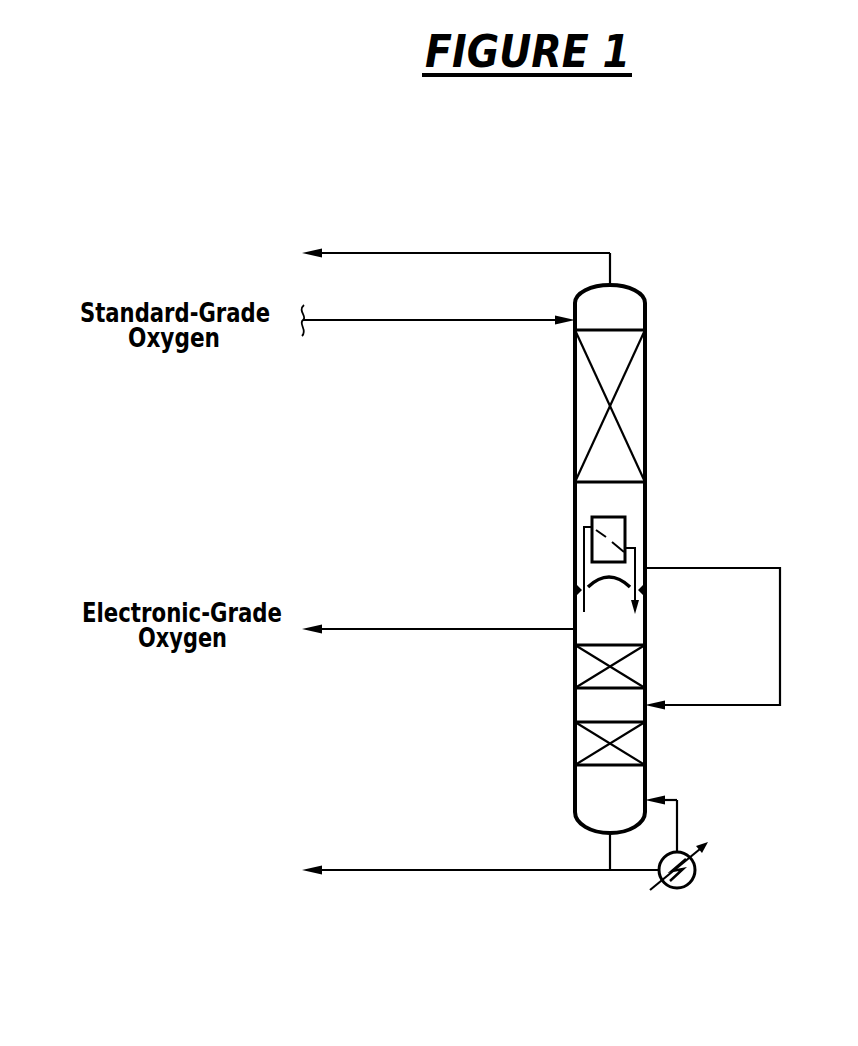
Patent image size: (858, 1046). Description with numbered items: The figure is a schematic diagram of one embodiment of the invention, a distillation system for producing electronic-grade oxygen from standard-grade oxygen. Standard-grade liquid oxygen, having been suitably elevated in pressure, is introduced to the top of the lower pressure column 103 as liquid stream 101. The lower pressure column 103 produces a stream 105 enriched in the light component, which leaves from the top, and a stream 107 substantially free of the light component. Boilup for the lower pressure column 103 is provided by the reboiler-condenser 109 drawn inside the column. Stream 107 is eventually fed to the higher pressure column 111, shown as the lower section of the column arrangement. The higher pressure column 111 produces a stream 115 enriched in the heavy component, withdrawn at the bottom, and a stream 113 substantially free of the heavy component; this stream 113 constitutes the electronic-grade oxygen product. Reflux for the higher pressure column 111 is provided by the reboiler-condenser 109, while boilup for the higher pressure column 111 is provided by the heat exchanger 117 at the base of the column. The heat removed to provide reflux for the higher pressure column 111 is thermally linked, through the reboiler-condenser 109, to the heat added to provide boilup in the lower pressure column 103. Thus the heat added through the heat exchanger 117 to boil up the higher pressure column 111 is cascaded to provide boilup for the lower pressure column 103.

The liquid stream 101 is at (440, 320).
The lower pressure column 103 is at (645, 397).
The stream enriched in the light component 105 is at (459, 253).
The stream substantially free of the light component 107 is at (781, 636).
The reboiler-condenser 109 is at (627, 533).
The higher pressure column 111 is at (576, 705).
The stream substantially free of the heavy component 113 is at (380, 629).
The stream enriched in the heavy component 115 is at (430, 870).
The heat exchanger 117 is at (694, 878).